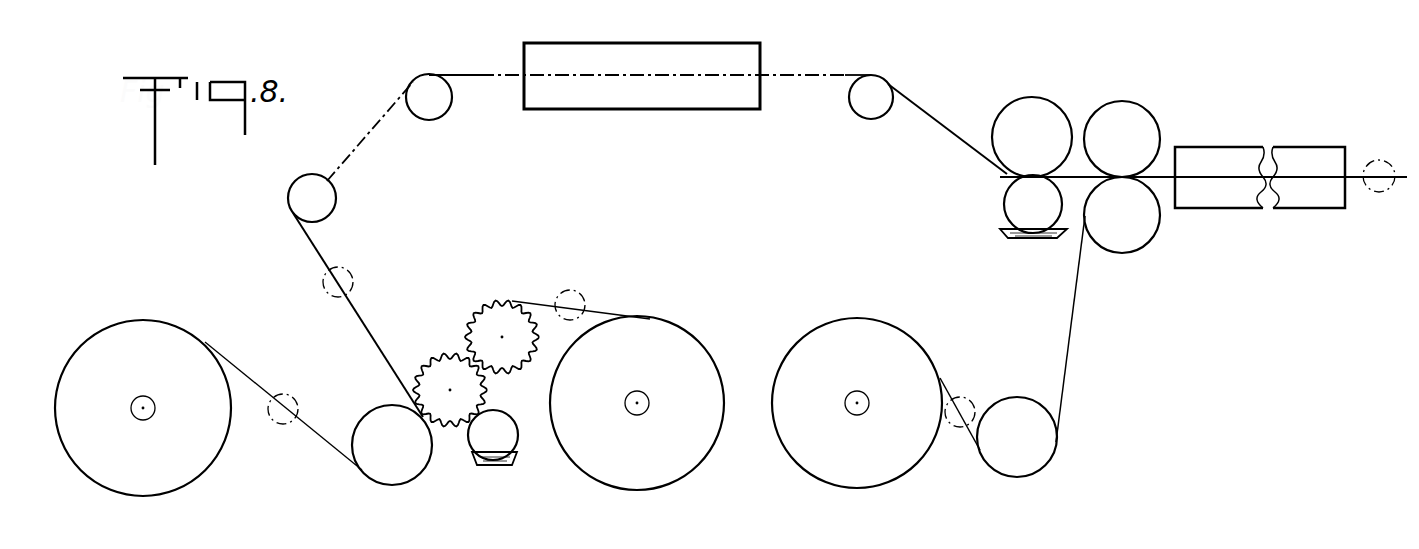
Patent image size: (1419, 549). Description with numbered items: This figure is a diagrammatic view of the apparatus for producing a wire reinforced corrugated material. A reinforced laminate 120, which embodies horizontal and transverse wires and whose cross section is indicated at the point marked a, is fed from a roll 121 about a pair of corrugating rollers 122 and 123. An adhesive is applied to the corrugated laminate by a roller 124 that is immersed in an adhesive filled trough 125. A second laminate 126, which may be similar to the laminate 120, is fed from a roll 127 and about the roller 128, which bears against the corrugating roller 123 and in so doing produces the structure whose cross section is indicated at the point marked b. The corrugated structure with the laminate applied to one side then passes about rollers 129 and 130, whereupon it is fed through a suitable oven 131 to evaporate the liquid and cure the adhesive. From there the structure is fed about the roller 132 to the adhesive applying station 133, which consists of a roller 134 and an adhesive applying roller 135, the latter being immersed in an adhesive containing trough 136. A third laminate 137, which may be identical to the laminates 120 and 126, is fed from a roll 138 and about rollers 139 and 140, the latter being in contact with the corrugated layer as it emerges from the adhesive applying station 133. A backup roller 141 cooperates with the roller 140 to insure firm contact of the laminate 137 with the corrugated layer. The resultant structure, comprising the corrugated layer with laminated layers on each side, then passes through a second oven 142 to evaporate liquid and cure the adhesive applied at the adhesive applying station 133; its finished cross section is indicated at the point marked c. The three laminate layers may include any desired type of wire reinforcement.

The reinforced laminate 120 is at (598, 312).
The roll 121 is at (690, 337).
The corrugating roller 122 is at (503, 300).
The corrugating roller 123 is at (432, 372).
The roller 124 is at (522, 408).
The adhesive filled trough 125 is at (527, 455).
The second laminate 126 is at (312, 440).
The roll 127 is at (155, 322).
The roller 128 is at (388, 470).
The roller 129 is at (328, 196).
The roller 130 is at (432, 112).
The oven 131 is at (658, 108).
The roller 132 is at (865, 110).
The adhesive applying station 133 is at (1034, 153).
The roller 134 is at (1033, 100).
The adhesive applying roller 135 is at (1013, 197).
The adhesive containing trough 136 is at (1000, 236).
The third laminate 137 is at (968, 442).
The roll 138 is at (853, 470).
The roller 139 is at (1018, 405).
The roller 140 is at (1118, 238).
The backup roller 141 is at (1132, 115).
The second oven 142 is at (1290, 147).
The cross section of laminate a is at (290, 394).
The cross section of corrugated structure with one laminate b is at (350, 268).
The cross section of resultant structure c is at (1392, 162).